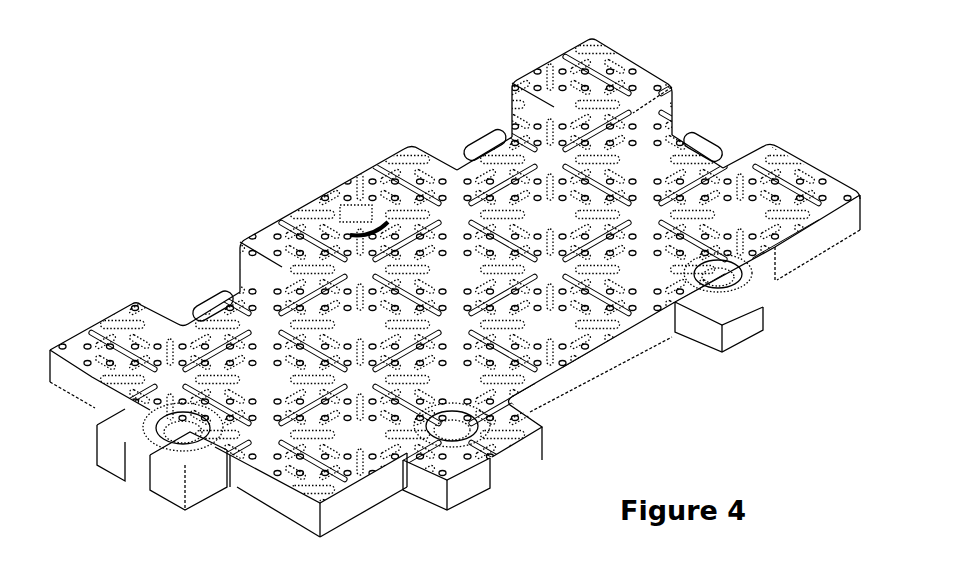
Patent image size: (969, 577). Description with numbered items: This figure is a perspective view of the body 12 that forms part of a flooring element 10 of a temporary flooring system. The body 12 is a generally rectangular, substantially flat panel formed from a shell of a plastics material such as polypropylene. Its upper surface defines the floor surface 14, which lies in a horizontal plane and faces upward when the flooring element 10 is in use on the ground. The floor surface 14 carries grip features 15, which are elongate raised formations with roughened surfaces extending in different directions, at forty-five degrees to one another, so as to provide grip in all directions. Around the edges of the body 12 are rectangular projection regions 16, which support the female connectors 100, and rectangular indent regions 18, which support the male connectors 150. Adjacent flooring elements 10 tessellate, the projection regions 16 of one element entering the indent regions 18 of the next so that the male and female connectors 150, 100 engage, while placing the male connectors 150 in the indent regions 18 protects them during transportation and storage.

The flooring element 10 is at (175, 128).
The body 12 is at (615, 355).
The floor surface 14 is at (457, 213).
The grip features 15 is at (390, 443).
The rectangular projection region 16 is at (100, 467).
The rectangular indent region 18 is at (258, 290).
The female connector 100 is at (173, 450).
The male connector 150 is at (197, 303).